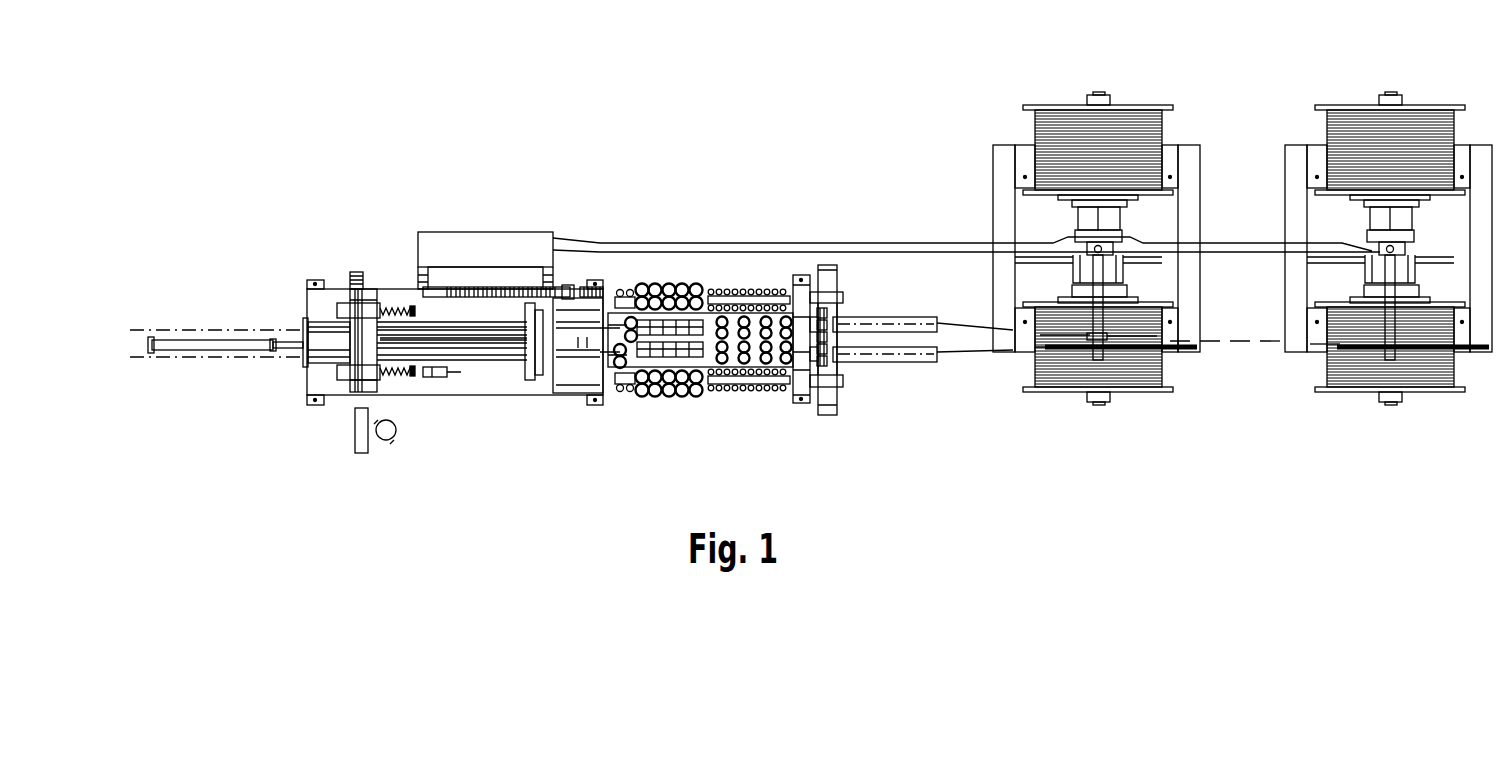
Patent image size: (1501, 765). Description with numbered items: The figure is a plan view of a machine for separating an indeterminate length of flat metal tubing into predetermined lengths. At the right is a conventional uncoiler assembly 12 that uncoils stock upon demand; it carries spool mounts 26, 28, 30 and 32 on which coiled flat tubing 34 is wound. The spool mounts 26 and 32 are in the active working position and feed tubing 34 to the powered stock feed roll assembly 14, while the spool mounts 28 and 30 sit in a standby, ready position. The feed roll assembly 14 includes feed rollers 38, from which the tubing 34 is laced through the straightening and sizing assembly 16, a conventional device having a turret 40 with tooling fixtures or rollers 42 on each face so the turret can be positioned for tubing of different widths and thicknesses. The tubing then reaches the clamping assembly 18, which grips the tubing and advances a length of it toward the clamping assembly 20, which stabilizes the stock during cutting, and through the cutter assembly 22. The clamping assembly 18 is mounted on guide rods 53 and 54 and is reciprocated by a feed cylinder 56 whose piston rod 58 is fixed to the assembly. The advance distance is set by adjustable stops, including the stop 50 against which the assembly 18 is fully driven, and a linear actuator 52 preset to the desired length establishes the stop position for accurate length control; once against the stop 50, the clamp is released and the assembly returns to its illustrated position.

The uncoiler assembly 12 is at (1141, 270).
The stock feed roll assembly 14 is at (833, 425).
The straightening and sizing assembly 16 is at (667, 405).
The clamping assembly 18 is at (540, 384).
The clamping assembly 20 is at (372, 280).
The cutter assembly 22 is at (343, 265).
The spool mount 26 is at (1137, 393).
The spool mount 28 is at (1142, 105).
The spool mount 30 is at (1417, 105).
The spool mount 32 is at (1433, 395).
The coiled flat tubing 34 is at (1163, 368).
The feed rollers 38 is at (836, 363).
The turret 40 is at (779, 402).
The tooling fixtures or rollers 42 is at (758, 292).
The adjustable stop 50 is at (418, 310).
The linear actuator 52 is at (493, 320).
The guide rod 53 is at (523, 272).
The guide rod 54 is at (492, 375).
The feed cylinder 56 is at (220, 338).
The piston rod 58 is at (467, 328).